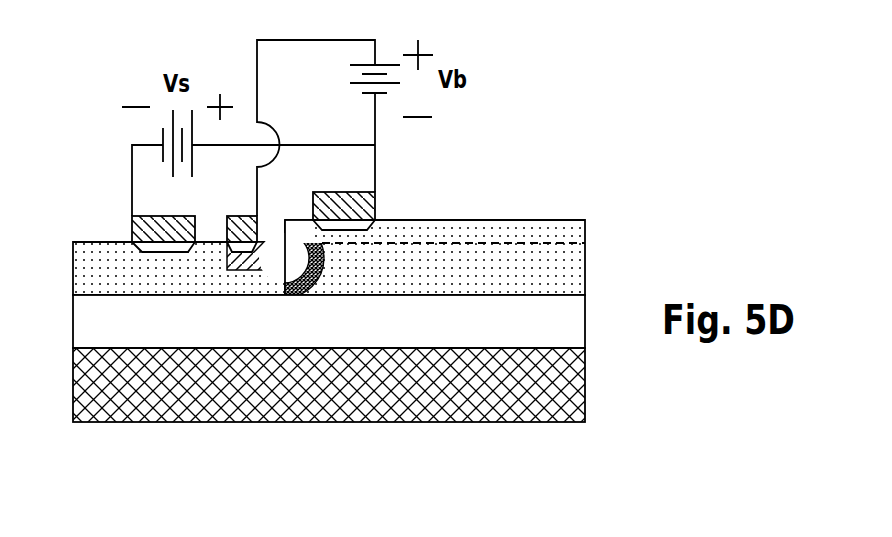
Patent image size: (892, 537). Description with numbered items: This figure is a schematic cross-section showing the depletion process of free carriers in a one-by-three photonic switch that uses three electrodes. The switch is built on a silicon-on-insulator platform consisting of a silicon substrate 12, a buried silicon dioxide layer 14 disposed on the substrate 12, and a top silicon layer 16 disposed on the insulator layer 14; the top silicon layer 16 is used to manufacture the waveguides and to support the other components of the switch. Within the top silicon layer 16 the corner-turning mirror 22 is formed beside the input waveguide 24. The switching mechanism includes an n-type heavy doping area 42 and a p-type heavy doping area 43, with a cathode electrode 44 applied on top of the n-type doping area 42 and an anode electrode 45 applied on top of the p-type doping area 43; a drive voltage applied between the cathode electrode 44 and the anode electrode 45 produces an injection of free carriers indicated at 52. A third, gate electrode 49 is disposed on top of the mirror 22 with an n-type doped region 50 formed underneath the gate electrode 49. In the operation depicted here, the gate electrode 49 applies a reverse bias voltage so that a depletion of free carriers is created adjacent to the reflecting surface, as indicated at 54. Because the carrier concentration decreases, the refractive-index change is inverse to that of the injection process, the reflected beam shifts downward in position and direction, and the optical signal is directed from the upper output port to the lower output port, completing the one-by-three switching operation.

The silicon substrate 12 is at (523, 398).
The silicon dioxide layer 14 is at (123, 325).
The silicon layer 16 is at (555, 268).
The mirror 22 is at (268, 257).
The input waveguide 24 is at (482, 233).
The n-type heavy doping area 42 is at (172, 250).
The p-type heavy doping area 43 is at (357, 222).
The cathode electrode 44 is at (150, 216).
The anode electrode 45 is at (343, 190).
The gate electrode 49 is at (237, 216).
The n-type doped region 50 is at (240, 256).
The injection of free carriers 52 is at (320, 262).
The depletion of free carriers 54 is at (292, 252).